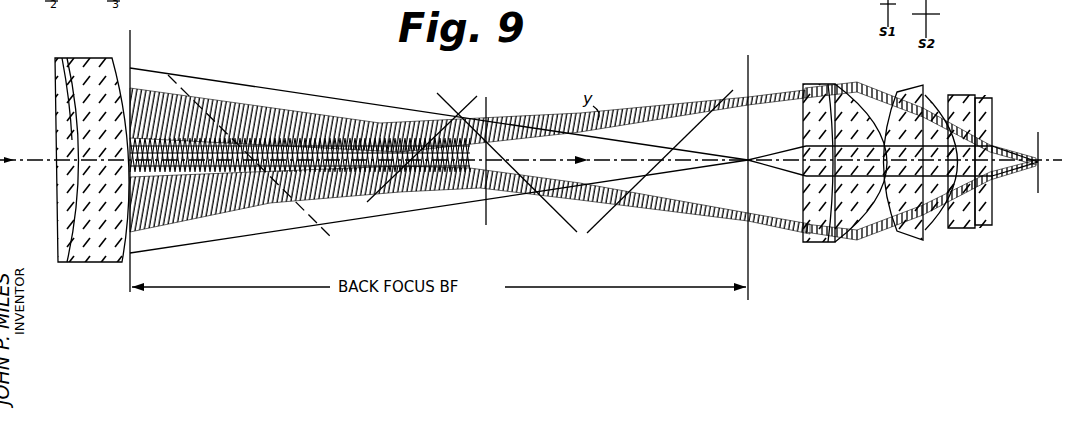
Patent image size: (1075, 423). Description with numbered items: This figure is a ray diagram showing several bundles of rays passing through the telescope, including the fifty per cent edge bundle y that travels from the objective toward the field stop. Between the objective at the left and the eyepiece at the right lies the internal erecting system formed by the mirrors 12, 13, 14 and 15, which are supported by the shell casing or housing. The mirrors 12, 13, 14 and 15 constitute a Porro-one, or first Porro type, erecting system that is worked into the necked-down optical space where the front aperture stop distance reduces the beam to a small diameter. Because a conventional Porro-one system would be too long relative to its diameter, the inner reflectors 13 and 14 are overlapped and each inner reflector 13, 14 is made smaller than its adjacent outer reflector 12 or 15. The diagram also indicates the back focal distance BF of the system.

The mirror 12 is at (153, 60).
The mirror 13 is at (372, 204).
The mirror 14 is at (553, 210).
The mirror 15 is at (730, 88).